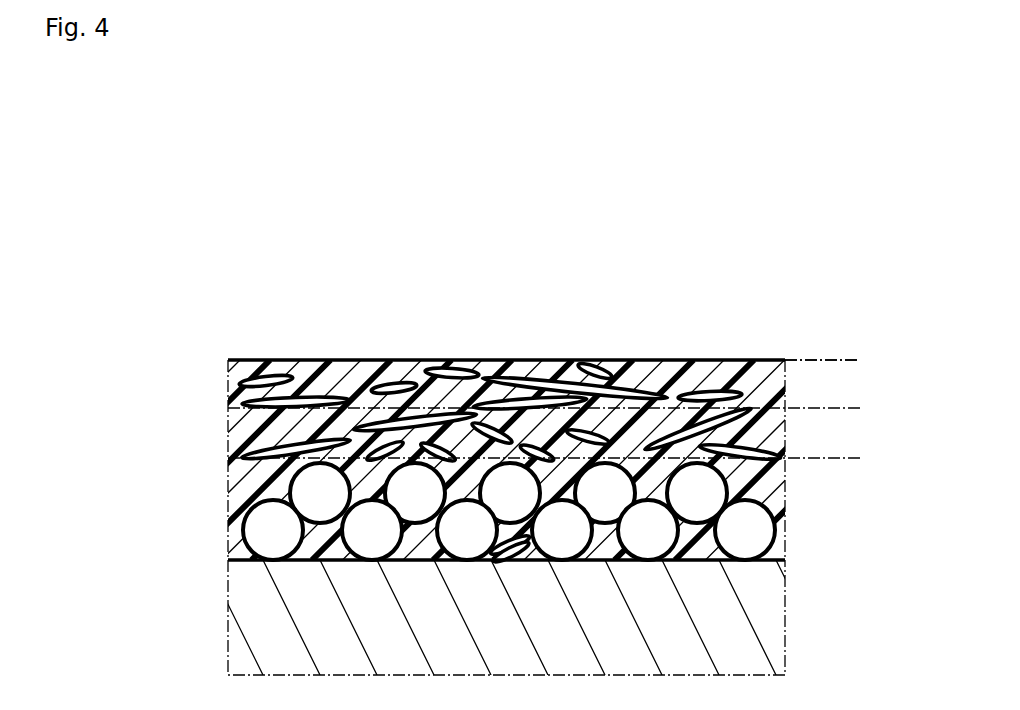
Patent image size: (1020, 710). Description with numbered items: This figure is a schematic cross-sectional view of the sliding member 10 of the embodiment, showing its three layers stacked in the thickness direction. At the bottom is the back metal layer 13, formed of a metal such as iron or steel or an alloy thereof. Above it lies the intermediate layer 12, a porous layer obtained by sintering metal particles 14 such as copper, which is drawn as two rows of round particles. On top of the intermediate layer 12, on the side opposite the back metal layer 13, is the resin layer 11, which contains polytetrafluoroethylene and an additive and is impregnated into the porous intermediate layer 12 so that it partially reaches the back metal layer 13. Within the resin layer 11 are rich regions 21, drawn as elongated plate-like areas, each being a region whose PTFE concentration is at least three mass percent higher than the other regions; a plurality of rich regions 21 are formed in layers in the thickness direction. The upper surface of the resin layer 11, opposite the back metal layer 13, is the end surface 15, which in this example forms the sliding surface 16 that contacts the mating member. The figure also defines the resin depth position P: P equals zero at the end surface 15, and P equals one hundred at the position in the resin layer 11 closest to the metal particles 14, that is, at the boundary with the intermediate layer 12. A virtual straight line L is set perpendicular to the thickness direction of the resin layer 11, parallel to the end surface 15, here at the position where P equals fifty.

The sliding member 10 is at (753, 266).
The resin layer 11 is at (217, 397).
The intermediate layer 12 is at (217, 502).
The back metal layer 13 is at (217, 605).
The metal particles 14 is at (228, 531).
The end surface 15 is at (440, 325).
The sliding surface 16 is at (262, 360).
The rich regions 21 is at (281, 376).
The virtual straight line L is at (833, 359).